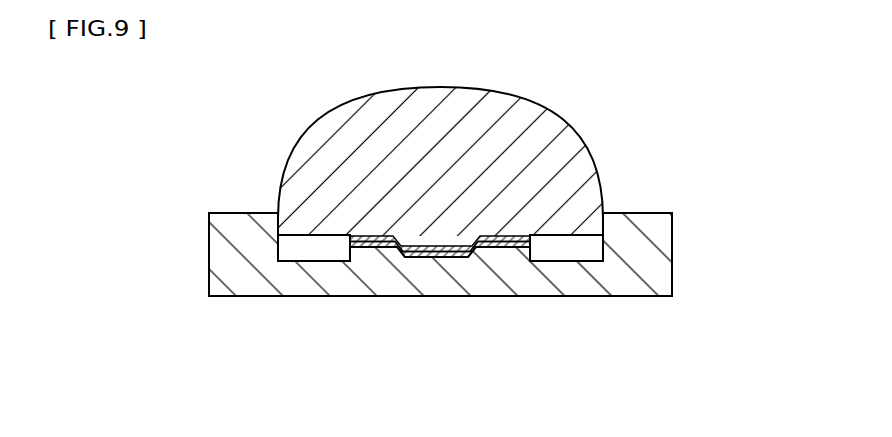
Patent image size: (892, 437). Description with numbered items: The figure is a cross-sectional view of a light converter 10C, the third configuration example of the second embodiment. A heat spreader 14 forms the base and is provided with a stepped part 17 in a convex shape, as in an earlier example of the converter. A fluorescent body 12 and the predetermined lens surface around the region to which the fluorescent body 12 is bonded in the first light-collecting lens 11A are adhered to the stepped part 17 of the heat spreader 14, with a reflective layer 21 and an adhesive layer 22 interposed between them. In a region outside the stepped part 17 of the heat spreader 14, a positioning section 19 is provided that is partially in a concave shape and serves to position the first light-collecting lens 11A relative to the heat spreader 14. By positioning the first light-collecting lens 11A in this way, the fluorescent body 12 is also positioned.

The light converter 10C is at (670, 133).
The first light-collecting lens 11A is at (566, 142).
The fluorescent body 12 is at (441, 258).
The heat spreader 14 is at (665, 252).
The stepped part 17 is at (373, 249).
The positioning section 19 is at (278, 252).
The reflective layer 21 is at (493, 250).
The adhesive layer 22 is at (520, 241).